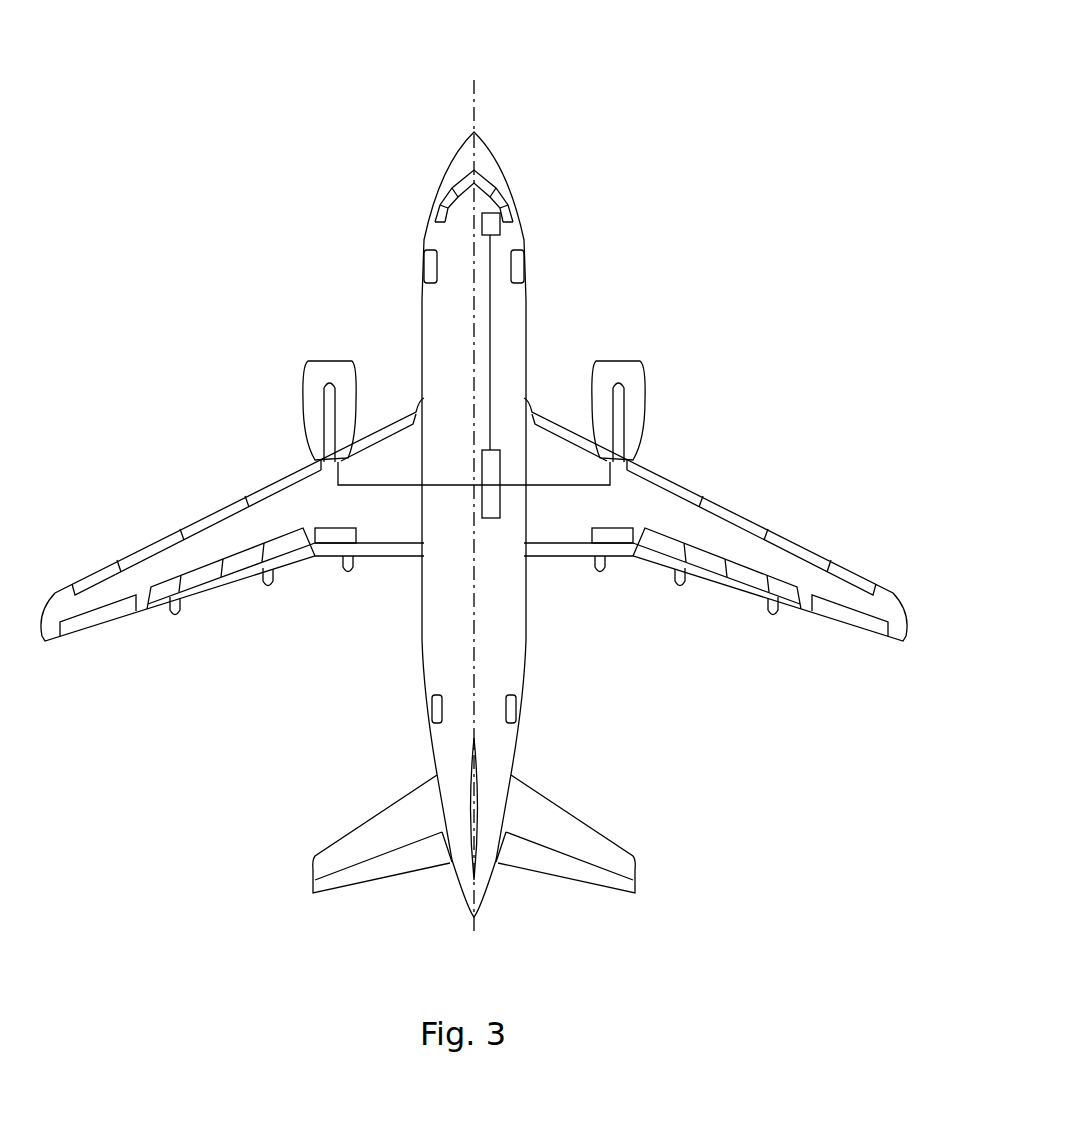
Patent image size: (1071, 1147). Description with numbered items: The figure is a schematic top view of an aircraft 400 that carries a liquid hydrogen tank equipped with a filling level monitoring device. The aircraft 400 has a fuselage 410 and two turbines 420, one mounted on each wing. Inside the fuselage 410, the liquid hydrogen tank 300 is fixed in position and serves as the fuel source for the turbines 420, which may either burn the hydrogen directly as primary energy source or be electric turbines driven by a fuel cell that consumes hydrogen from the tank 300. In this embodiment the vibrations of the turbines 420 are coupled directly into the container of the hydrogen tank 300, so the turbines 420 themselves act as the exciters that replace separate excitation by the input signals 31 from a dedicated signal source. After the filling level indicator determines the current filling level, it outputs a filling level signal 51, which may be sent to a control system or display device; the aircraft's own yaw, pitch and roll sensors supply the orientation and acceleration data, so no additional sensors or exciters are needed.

The aircraft 400 is at (623, 108).
The fuselage 410 is at (527, 235).
The turbines 420 is at (326, 350).
The filling level signal 51 is at (494, 313).
The liquid hydrogen tank 300 is at (500, 448).
The input signals 31 is at (384, 488).